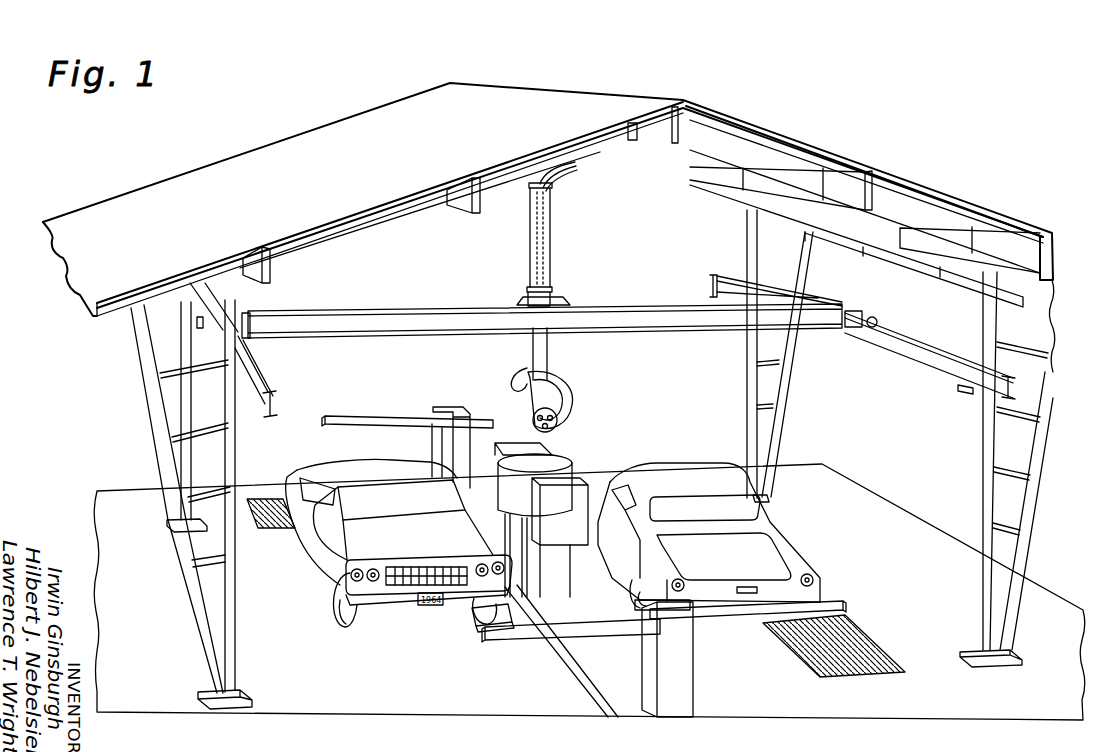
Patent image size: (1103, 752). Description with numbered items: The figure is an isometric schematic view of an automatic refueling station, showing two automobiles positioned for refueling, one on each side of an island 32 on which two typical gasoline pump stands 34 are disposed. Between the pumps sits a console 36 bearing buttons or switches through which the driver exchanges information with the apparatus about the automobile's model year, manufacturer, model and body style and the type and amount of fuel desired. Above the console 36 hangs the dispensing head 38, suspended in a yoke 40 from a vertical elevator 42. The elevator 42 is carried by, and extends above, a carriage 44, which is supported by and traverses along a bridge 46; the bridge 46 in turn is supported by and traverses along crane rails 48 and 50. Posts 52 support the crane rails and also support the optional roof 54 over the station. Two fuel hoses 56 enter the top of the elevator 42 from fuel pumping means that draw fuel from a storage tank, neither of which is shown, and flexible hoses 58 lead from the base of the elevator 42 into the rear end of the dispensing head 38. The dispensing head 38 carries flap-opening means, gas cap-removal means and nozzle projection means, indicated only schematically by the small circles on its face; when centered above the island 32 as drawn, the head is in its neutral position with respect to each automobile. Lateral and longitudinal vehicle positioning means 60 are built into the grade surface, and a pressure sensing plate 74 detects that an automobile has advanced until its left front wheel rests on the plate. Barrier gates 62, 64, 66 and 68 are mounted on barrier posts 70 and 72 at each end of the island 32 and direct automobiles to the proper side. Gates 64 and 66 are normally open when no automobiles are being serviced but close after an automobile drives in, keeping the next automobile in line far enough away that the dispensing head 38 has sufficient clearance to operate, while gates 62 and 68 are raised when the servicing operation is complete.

The island 32 is at (621, 670).
The gasoline pump stands 34 is at (548, 450).
The console 36 is at (572, 460).
The dispensing head 38 is at (562, 425).
The yoke 40 is at (565, 385).
The vertical elevator 42 is at (533, 345).
The carriage 44 is at (527, 293).
The bridge 46 is at (608, 292).
The crane rail 48 is at (905, 335).
The crane rail 50 is at (262, 368).
The posts 52 is at (178, 403).
The roof 54 is at (830, 153).
The fuel hoses 56 is at (572, 172).
The flexible hoses 58 is at (515, 377).
The vehicle positioning means 60 is at (785, 648).
The barrier gate 62 is at (533, 642).
The barrier gate 64 is at (838, 600).
The barrier gate 66 is at (372, 416).
The barrier gate 68 is at (476, 410).
The barrier post 70 is at (693, 695).
The barrier post 72 is at (430, 447).
The pressure sensing plate 74 is at (470, 622).